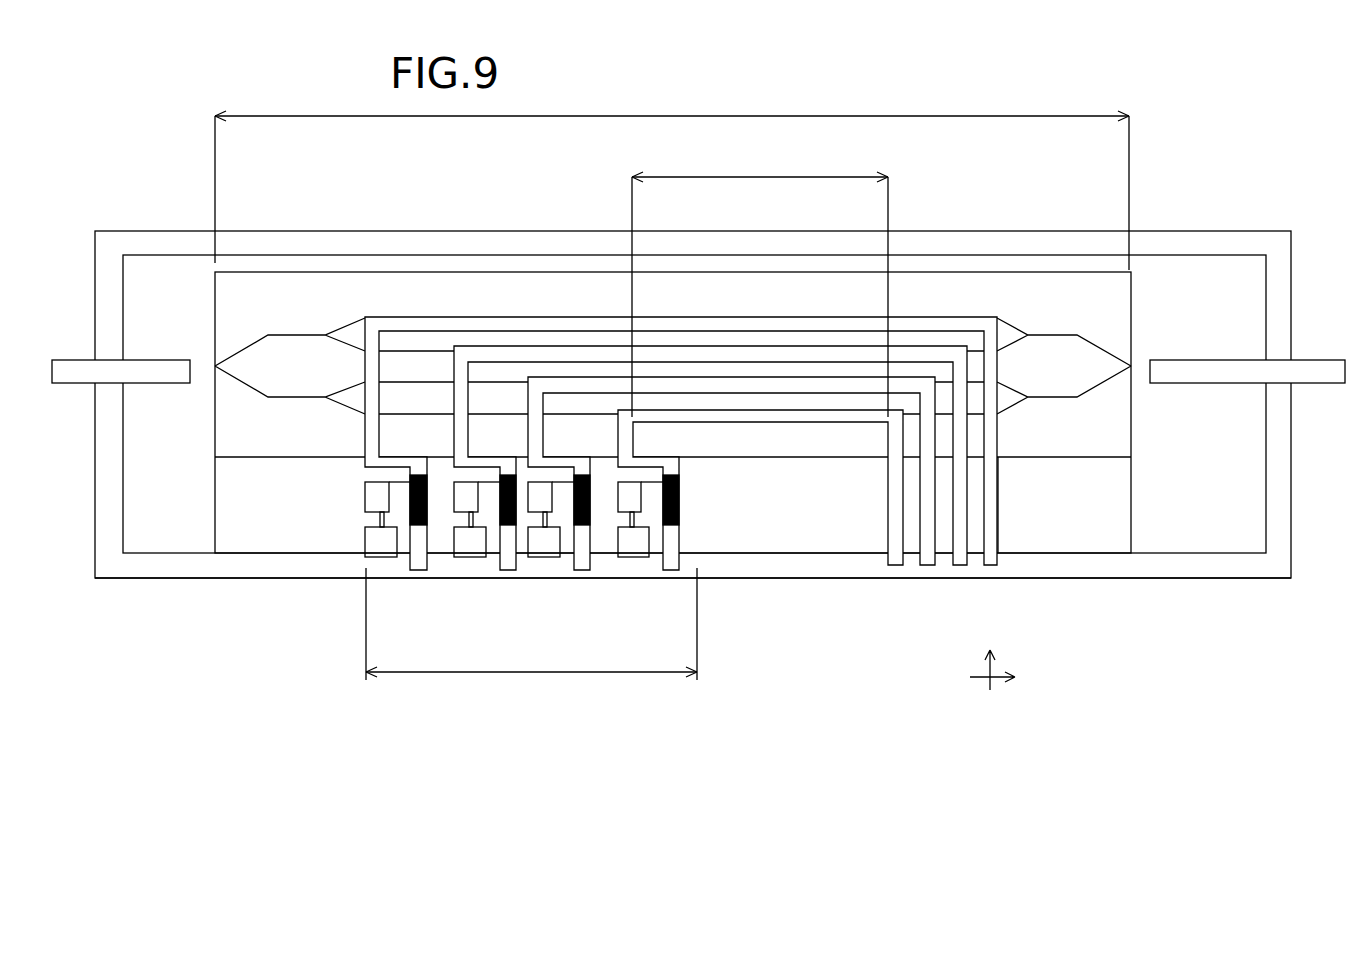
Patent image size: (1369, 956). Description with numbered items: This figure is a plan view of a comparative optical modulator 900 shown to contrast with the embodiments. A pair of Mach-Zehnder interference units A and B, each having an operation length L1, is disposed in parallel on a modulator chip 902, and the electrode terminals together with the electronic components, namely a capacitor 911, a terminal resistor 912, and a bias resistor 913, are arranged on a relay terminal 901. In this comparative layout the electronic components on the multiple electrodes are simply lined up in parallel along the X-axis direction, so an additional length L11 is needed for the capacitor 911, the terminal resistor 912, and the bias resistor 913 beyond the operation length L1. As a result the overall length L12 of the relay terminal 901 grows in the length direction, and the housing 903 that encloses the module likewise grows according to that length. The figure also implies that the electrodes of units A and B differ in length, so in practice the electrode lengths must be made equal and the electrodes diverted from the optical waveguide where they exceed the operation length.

The optical modulator 900 is at (698, 395).
The relay terminal 901 is at (1131, 510).
The modulator chip 902 is at (1229, 164).
The housing 903 is at (1185, 570).
The capacitor 911 is at (626, 505).
The terminal resistor 912 is at (635, 547).
The bias resistor 913 is at (679, 500).